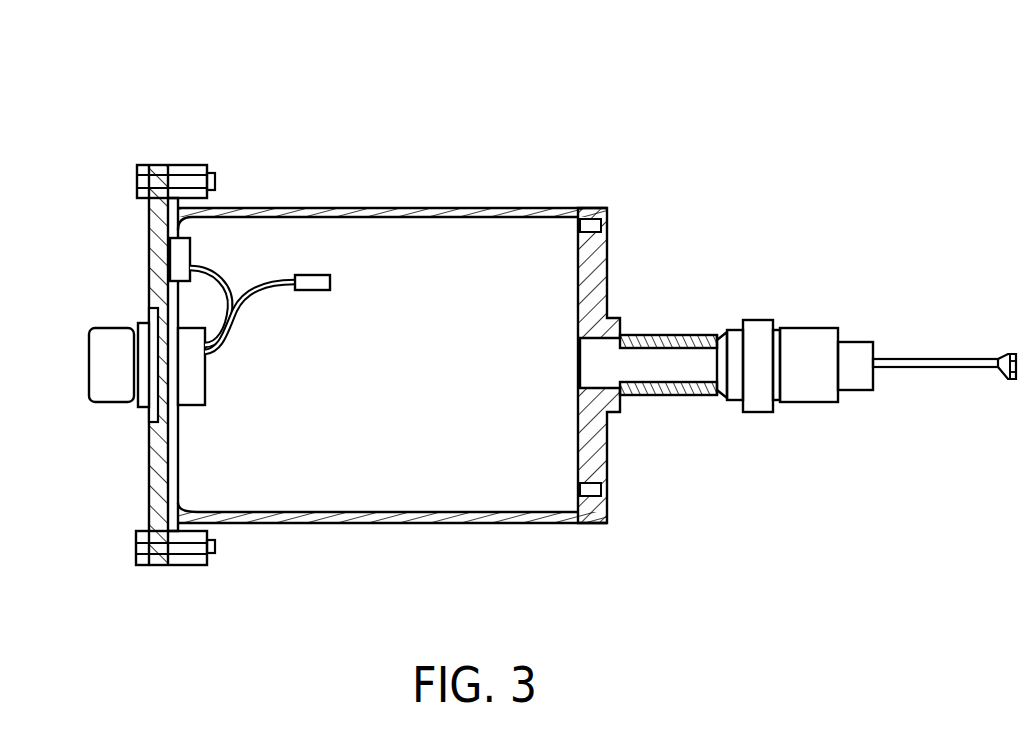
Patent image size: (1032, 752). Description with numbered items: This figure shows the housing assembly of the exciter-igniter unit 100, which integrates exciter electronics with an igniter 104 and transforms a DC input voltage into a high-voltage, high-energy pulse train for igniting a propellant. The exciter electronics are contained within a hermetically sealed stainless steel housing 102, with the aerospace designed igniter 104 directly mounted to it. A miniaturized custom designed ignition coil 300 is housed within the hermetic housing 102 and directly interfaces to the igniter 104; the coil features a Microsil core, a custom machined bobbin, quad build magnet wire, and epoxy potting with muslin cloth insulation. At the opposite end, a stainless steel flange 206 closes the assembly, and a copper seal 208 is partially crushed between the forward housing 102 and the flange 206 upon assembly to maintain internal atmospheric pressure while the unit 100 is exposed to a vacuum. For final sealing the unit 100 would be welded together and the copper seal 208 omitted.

The exciter-igniter unit 100 is at (738, 143).
The housing 102 is at (480, 262).
The igniter 104 is at (808, 348).
The flange 206 is at (160, 230).
The copper seal 208 is at (173, 210).
The ignition coil 300 is at (288, 278).